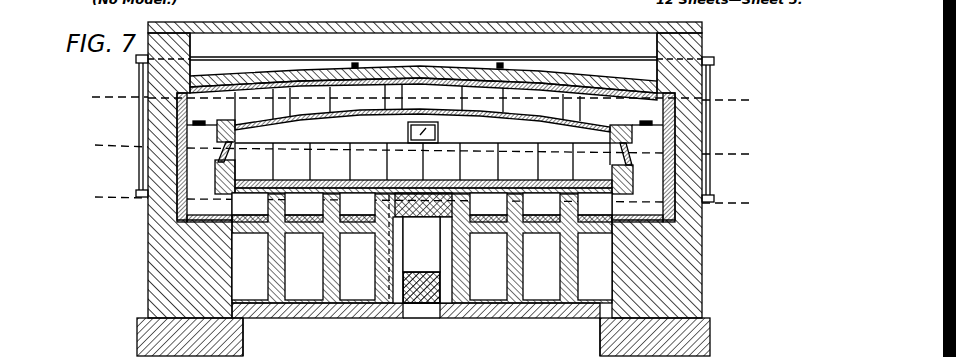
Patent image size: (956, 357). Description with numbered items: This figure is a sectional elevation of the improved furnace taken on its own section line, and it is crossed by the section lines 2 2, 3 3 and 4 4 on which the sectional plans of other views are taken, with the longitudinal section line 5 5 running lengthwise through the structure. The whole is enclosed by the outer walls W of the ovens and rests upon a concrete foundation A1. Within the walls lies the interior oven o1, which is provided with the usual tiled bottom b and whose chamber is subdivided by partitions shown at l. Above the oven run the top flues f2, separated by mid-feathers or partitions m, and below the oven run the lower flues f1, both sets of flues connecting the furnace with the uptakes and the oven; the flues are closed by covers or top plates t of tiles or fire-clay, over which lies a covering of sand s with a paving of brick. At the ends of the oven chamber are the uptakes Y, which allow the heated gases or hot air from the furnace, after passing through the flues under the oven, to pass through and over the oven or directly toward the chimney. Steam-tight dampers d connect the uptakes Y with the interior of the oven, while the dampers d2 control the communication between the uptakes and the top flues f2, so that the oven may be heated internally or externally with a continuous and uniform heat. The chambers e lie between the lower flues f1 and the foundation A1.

The section line 2 2 is at (421, 203).
The section line 3 3 is at (424, 149).
The section line 4 4 is at (419, 101).
The section line 5 5 is at (440, 342).
The outer walls of the ovens W is at (147, 259).
The concrete foundation A1 is at (248, 338).
The covering of sand s is at (425, 122).
The covers or top plates t is at (231, 82).
The flues f2 is at (427, 104).
The mid-feathers or partitions m is at (422, 173).
The damper d2 is at (228, 96).
The uptakes Y is at (213, 165).
The dampers d is at (422, 161).
The chamber partitions l is at (412, 161).
The tiled bottoms b is at (447, 161).
The interior oven o1 is at (450, 160).
The flues f1 is at (422, 248).
The air chambers e is at (422, 260).